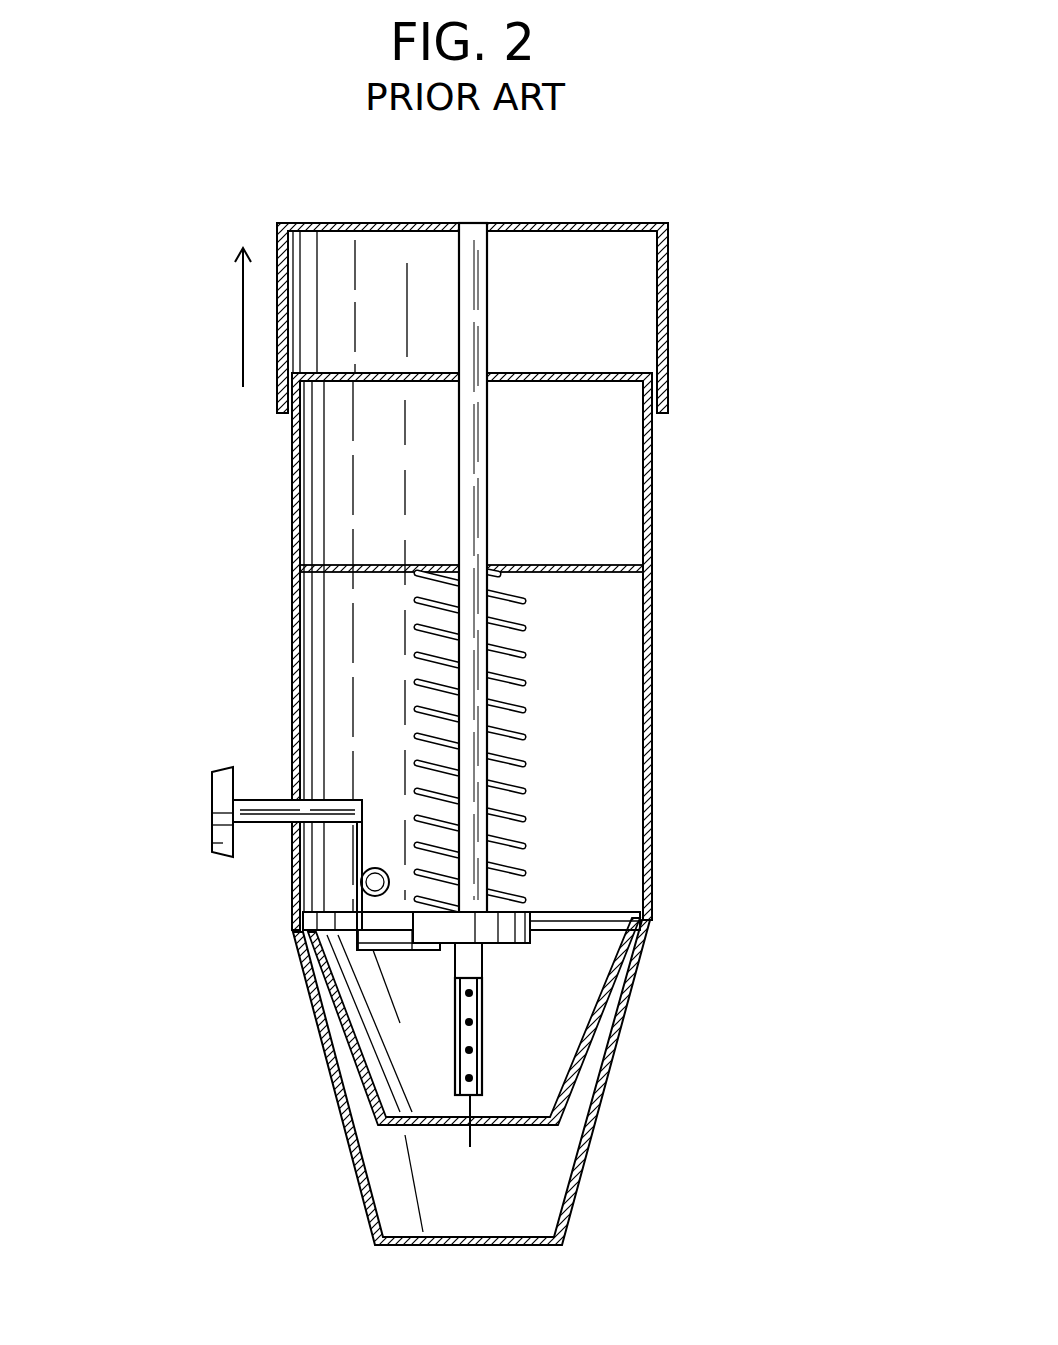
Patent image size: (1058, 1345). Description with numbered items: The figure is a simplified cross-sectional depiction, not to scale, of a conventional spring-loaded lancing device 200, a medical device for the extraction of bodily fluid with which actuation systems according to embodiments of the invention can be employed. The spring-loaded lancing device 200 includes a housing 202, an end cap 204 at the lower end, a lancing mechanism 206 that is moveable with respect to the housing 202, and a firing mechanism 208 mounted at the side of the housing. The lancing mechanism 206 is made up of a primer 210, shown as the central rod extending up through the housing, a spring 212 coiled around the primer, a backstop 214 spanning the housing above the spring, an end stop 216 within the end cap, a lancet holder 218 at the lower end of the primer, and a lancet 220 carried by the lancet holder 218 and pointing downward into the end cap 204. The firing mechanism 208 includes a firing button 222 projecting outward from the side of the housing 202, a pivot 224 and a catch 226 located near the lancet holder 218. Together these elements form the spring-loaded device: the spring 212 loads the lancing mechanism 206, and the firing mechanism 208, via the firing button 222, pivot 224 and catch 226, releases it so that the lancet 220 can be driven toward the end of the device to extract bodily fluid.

The spring-loaded lancing device 200 is at (768, 387).
The housing 202 is at (653, 508).
The end cap 204 is at (580, 1190).
The lancing mechanism 206 is at (568, 820).
The firing mechanism 208 is at (257, 851).
The primer 210 is at (480, 472).
The spring 212 is at (527, 653).
The backstop 214 is at (347, 563).
The end stop 216 is at (528, 1112).
The lancet holder 218 is at (530, 922).
The lancet 220 is at (470, 1030).
The firing button 222 is at (218, 826).
The pivot 224 is at (363, 887).
The catch 226 is at (403, 953).